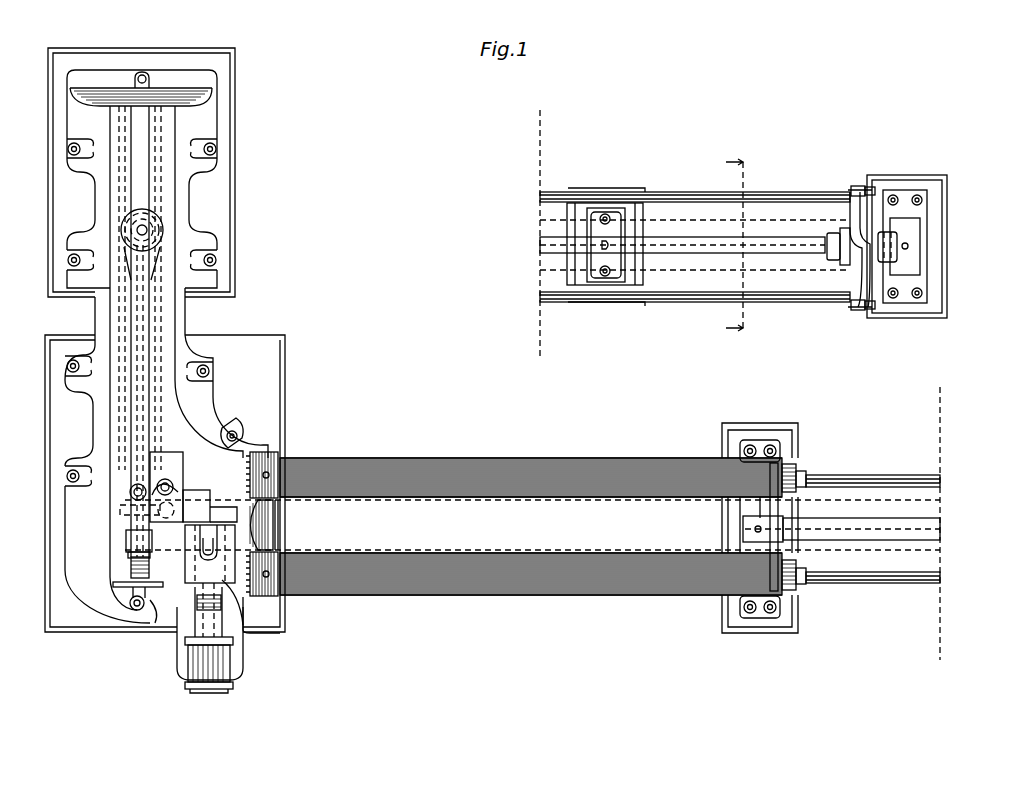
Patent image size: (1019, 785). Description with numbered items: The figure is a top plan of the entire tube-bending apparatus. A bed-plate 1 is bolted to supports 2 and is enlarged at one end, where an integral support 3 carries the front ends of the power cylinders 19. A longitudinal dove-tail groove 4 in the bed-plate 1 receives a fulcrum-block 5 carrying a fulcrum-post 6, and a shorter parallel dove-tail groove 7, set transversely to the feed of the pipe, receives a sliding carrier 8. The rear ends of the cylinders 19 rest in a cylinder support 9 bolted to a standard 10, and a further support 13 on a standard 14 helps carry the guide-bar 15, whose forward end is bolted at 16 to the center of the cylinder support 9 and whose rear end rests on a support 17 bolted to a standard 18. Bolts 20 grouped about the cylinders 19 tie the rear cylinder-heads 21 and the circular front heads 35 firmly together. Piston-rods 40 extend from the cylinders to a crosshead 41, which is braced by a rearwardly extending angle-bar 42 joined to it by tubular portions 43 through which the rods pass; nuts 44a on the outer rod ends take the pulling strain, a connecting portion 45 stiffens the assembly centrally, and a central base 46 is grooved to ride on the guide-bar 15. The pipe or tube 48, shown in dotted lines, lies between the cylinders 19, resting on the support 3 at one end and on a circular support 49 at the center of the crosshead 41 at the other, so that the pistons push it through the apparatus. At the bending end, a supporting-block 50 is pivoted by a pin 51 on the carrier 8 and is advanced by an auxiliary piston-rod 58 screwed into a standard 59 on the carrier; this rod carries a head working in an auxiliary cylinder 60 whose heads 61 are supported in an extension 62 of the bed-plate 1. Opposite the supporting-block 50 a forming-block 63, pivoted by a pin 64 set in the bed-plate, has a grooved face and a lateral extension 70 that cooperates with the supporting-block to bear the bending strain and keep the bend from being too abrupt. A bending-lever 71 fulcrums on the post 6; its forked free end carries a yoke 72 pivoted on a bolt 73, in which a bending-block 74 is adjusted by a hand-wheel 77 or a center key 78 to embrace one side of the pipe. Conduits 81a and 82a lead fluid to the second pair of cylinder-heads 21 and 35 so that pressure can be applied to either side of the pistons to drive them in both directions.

The bed-plate 1 is at (212, 112).
The supports 2 is at (48, 156).
The integral cylinder support 3 is at (275, 522).
The dove-tail groove 4 is at (145, 112).
The fulcrum-block 5 is at (150, 218).
The fulcrum-post 6 is at (138, 230).
The dove-tail groove 7 is at (200, 618).
The carrier 8 is at (222, 612).
The cylinder support 9 is at (758, 440).
The standard 10 is at (765, 630).
The support 13 is at (614, 283).
The standard 14 is at (582, 286).
The guide-bar 15 is at (930, 530).
The bolted connection 16 is at (742, 525).
The support 17 is at (925, 292).
The standard 18 is at (948, 263).
The power cylinders 19 is at (474, 458).
The bolts 20 is at (600, 458).
The rear cylinder-heads 21 is at (798, 465).
The circular heads 35 is at (285, 458).
The piston-rod 40 is at (892, 470).
The crosshead 41 is at (842, 240).
The angle-bar 42 is at (886, 232).
The tubular portions 43 is at (858, 186).
The nuts 44a is at (872, 190).
The connecting portion 45 is at (856, 232).
The central base 46 is at (905, 240).
The pipe or tube 48 is at (425, 553).
The circular support 49 is at (834, 258).
The supporting-block 50 is at (195, 572).
The pivotal pin 51 is at (205, 538).
The auxiliary piston-rod 58 is at (240, 640).
The standard 59 is at (200, 600).
The auxiliary cylinder 60 is at (200, 660).
The heads 61 is at (232, 690).
The extension 62 is at (177, 660).
The forming-block 63 is at (172, 458).
The pivotal pin 64 is at (175, 490).
The lateral extension 70 is at (205, 497).
The bending-lever 71 is at (135, 300).
The yoke 72 is at (126, 538).
The bolt 73 is at (132, 493).
The bending-block 74 is at (128, 548).
The hand-wheel 77 is at (118, 590).
The center key 78 is at (135, 595).
The conduit 81a is at (790, 506).
The conduit 82a is at (280, 543).